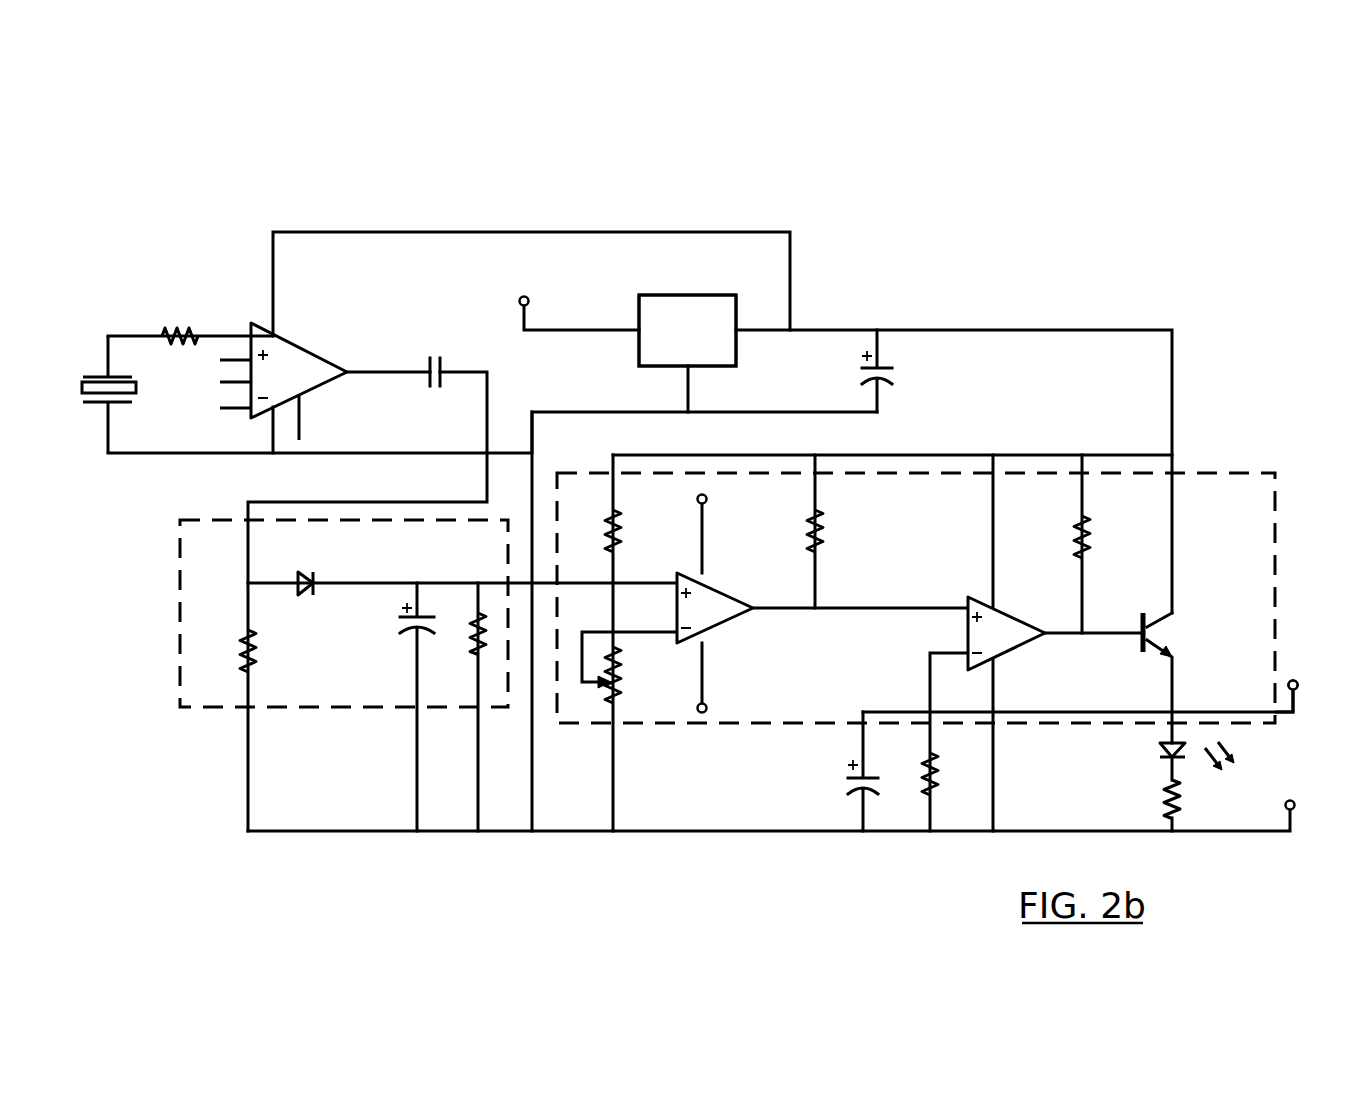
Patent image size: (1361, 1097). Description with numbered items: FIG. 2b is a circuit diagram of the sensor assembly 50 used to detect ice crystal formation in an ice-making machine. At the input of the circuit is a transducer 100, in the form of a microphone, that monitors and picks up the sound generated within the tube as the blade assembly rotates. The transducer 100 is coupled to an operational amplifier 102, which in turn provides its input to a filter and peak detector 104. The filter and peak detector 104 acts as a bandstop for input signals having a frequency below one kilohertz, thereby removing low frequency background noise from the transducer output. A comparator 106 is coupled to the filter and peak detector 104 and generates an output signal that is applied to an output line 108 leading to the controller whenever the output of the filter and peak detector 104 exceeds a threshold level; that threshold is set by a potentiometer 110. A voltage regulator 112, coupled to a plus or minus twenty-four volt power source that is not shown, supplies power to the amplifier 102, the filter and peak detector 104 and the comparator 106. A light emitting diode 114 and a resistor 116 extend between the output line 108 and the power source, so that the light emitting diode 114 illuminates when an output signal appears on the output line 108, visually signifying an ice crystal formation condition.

The sensor assembly 50 is at (694, 469).
The transducer 100 is at (80, 388).
The operational amplifier 102 is at (323, 350).
The filter and peak detector 104 is at (315, 708).
The comparator 106 is at (940, 568).
The output line 108 is at (1280, 715).
The potentiometer 110 is at (622, 694).
The voltage regulator 112 is at (737, 350).
The light emitting diode 114 is at (1162, 748).
The resistor 116 is at (1180, 810).